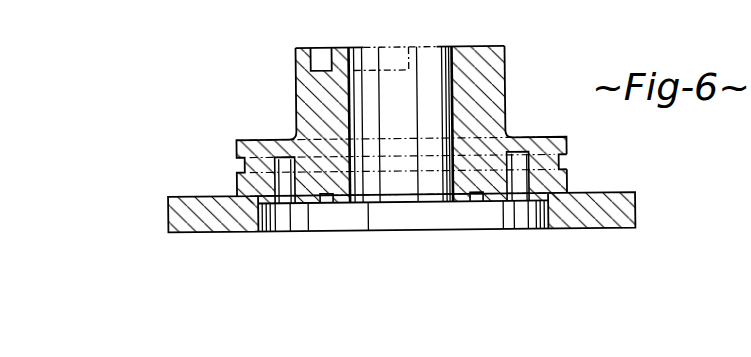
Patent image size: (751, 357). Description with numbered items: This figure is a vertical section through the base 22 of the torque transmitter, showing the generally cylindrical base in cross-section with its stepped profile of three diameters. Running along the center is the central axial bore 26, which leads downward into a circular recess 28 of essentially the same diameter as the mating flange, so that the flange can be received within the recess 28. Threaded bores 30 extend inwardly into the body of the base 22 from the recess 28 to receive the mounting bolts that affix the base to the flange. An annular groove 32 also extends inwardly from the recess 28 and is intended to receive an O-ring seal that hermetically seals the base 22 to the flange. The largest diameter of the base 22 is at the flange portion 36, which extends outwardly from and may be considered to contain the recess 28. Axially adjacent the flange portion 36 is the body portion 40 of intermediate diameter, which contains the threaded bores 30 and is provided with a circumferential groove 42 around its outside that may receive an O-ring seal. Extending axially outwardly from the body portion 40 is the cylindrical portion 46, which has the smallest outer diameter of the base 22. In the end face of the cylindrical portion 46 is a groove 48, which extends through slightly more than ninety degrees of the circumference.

The base 22 is at (507, 78).
The central axial bore 26 is at (452, 64).
The circular recess 28 is at (538, 222).
The threaded bores 30 is at (290, 197).
The annular groove 32 is at (330, 195).
The flange portion 36 is at (622, 213).
The body portion 40 is at (540, 137).
The circumferential groove 42 is at (563, 161).
The cylindrical portion 46 is at (494, 50).
The groove 48 is at (324, 58).